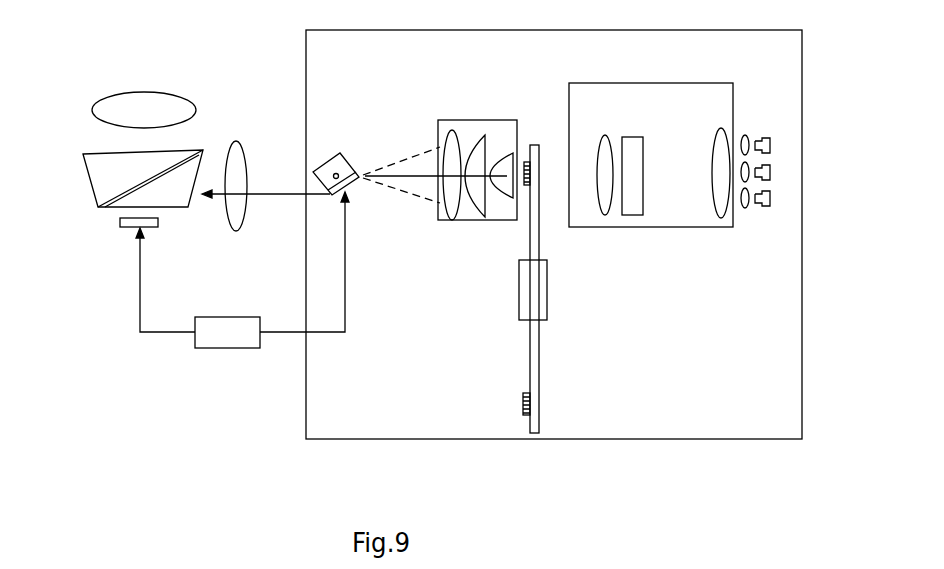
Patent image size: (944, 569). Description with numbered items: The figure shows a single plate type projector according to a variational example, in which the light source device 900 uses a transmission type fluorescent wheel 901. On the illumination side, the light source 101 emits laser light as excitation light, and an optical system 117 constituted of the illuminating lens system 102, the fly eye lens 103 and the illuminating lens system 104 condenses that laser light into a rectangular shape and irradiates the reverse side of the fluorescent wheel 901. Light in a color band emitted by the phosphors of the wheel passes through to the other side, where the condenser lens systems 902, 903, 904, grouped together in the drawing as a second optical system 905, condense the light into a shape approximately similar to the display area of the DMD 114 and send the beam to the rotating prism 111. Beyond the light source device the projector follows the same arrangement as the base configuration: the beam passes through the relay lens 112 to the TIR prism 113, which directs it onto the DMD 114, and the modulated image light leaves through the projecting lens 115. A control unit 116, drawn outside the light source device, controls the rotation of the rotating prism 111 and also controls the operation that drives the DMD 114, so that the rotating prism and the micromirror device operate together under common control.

The light source 101 is at (755, 132).
The illuminating lens system 102 is at (720, 127).
The fly eye lens 103 is at (635, 135).
The illuminating lens system 104 is at (602, 133).
The optical system 117 is at (648, 82).
The rotating prism 111 is at (343, 152).
The relay lens 112 is at (235, 140).
The TIR prism 113 is at (85, 188).
The DMD 114 is at (118, 222).
The projecting lens 115 is at (92, 112).
The control unit 116 is at (228, 350).
The light source device 900 is at (555, 440).
The fluorescent wheel 901 is at (547, 290).
The condenser lens system 902 is at (493, 153).
The condenser lens system 903 is at (473, 125).
The condenser lens system 904 is at (450, 127).
The lens barrel 905 is at (475, 222).